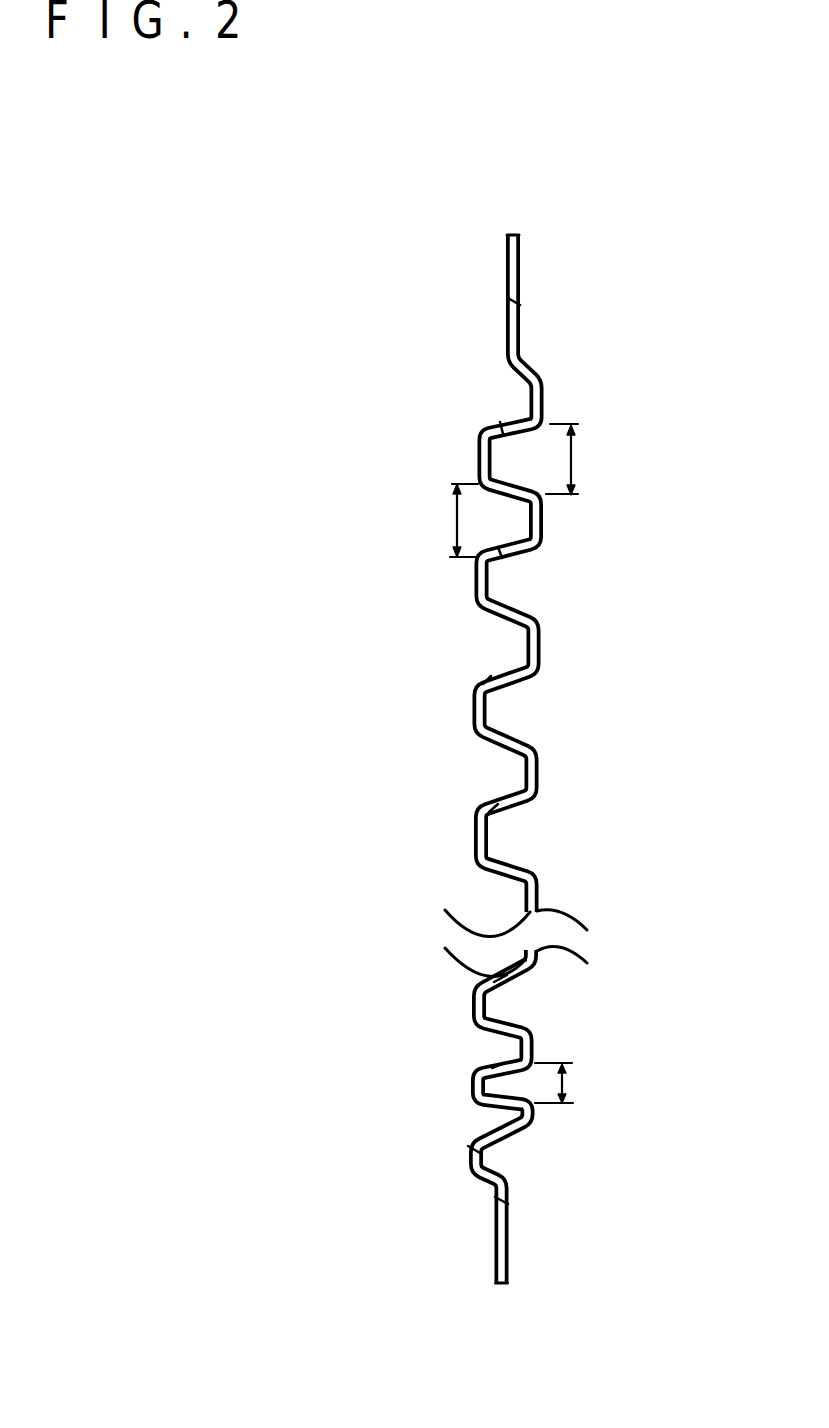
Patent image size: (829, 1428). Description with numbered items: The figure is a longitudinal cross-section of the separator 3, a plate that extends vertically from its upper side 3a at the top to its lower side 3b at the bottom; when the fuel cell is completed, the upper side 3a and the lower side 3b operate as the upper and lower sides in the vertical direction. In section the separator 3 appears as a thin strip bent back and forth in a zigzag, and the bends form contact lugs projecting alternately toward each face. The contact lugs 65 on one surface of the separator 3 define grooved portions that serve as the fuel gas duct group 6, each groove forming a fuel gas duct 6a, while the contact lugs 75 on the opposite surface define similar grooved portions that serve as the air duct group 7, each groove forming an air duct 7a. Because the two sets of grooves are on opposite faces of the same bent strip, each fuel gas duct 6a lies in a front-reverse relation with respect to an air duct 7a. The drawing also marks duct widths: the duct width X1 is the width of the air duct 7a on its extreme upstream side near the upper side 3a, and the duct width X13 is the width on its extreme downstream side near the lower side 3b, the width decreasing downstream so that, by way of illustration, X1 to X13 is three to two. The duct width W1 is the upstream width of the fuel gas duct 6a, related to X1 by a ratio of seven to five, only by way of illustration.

The separator 3 is at (517, 333).
The upper side 3a is at (513, 235).
The lower side 3b is at (500, 1285).
The fuel gas duct group 6 is at (480, 777).
The fuel gas duct 6a is at (488, 505).
The contact lugs 65 is at (477, 450).
The air duct group 7 is at (533, 475).
The air duct 7a is at (513, 457).
The contact lugs 75 is at (541, 390).
The duct width W1 is at (436, 520).
The duct width X1 is at (586, 459).
The duct width X13 is at (586, 1084).